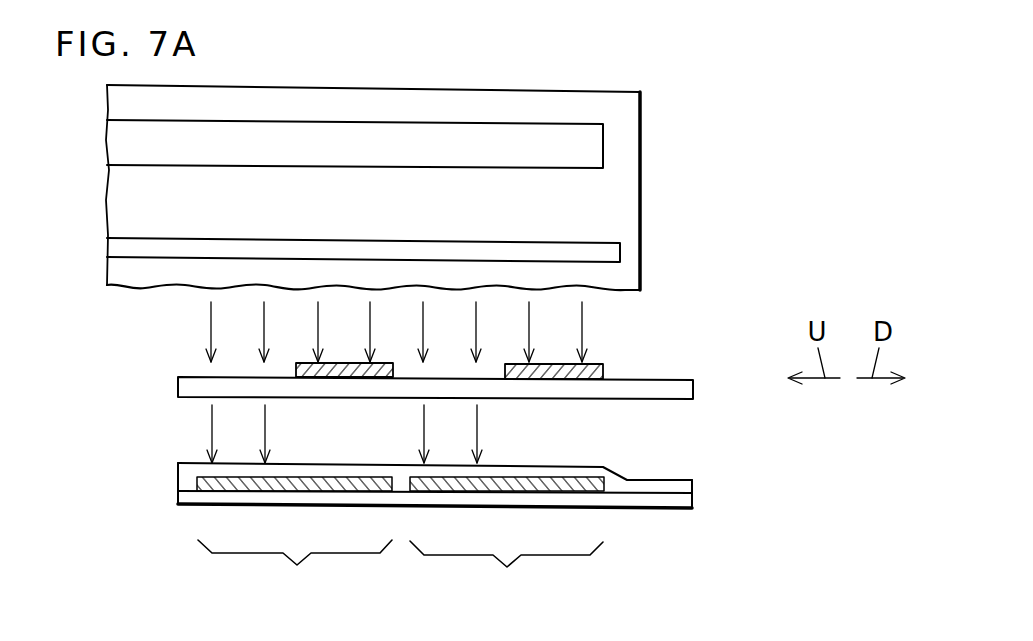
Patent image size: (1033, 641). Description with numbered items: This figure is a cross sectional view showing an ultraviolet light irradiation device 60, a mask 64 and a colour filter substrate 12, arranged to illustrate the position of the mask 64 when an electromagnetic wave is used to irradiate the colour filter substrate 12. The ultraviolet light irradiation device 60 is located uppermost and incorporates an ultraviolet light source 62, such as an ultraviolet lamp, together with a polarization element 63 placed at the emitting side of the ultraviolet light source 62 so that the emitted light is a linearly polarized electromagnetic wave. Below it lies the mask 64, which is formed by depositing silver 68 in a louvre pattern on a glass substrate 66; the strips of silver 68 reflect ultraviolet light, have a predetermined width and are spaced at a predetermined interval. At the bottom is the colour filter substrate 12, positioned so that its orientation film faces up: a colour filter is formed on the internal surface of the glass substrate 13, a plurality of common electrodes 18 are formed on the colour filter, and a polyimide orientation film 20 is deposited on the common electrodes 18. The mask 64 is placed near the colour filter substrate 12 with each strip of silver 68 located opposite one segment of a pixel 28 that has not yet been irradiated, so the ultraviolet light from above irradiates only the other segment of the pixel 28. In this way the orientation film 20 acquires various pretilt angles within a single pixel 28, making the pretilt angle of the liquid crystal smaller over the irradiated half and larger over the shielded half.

The colour filter substrate 12 is at (517, 503).
The glass substrate 13 is at (693, 500).
The common electrodes 18 is at (490, 491).
The polyimide orientation film 20 is at (690, 487).
The pixel 28 is at (400, 571).
The ultraviolet light irradiation device 60 is at (646, 189).
The ultraviolet light source 62 is at (603, 145).
The polarization element 63 is at (620, 251).
The mask 64 is at (468, 381).
The glass substrate 66 is at (693, 380).
The silver 68 is at (603, 370).